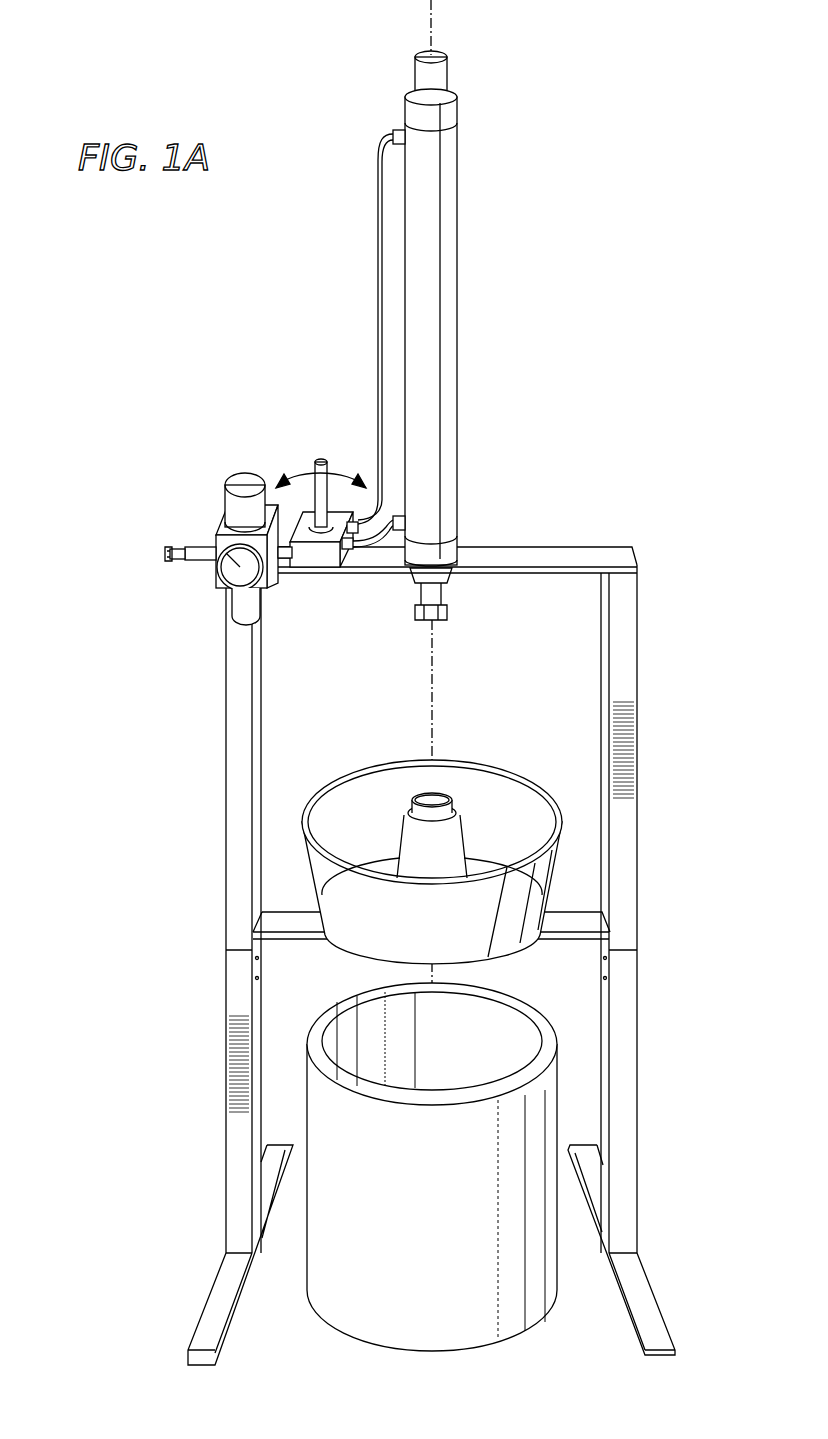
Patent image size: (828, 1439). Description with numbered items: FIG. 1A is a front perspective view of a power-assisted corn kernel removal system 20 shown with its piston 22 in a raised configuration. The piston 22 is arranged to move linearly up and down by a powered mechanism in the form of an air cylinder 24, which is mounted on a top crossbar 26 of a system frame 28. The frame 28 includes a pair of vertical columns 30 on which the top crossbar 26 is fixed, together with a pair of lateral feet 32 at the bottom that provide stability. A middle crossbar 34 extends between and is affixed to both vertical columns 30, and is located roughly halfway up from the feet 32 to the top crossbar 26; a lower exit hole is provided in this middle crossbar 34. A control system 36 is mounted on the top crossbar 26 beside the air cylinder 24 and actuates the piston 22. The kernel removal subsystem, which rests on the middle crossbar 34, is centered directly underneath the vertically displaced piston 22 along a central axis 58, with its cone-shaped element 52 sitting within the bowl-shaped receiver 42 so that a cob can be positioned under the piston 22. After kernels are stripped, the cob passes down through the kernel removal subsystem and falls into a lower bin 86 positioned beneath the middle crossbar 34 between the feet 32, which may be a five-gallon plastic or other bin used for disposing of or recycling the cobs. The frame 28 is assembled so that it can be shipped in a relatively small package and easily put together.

The corn kernel removal system 20 is at (128, 483).
The piston 22 is at (438, 620).
The air cylinder 24 is at (457, 290).
The top crossbar 26 is at (543, 556).
The system frame 28 is at (235, 770).
The vertical columns 30 is at (637, 667).
The lateral feet 32 is at (212, 1330).
The middle crossbar 34 is at (567, 940).
The control system 36 is at (288, 440).
The bowl 42 is at (365, 917).
The cone die 52 is at (415, 792).
The central axis 58 is at (432, 40).
The lower bin 86 is at (366, 1090).